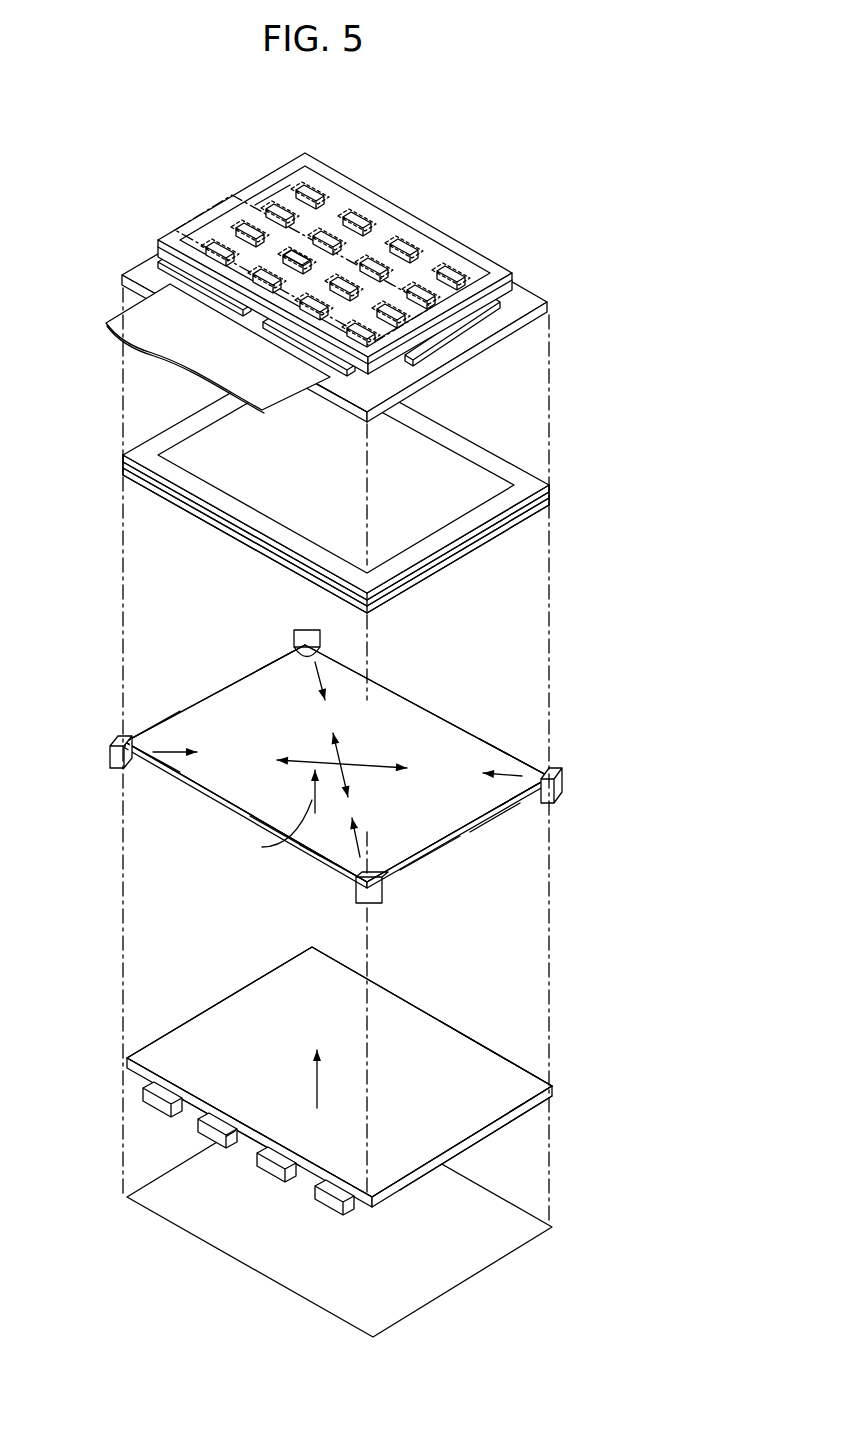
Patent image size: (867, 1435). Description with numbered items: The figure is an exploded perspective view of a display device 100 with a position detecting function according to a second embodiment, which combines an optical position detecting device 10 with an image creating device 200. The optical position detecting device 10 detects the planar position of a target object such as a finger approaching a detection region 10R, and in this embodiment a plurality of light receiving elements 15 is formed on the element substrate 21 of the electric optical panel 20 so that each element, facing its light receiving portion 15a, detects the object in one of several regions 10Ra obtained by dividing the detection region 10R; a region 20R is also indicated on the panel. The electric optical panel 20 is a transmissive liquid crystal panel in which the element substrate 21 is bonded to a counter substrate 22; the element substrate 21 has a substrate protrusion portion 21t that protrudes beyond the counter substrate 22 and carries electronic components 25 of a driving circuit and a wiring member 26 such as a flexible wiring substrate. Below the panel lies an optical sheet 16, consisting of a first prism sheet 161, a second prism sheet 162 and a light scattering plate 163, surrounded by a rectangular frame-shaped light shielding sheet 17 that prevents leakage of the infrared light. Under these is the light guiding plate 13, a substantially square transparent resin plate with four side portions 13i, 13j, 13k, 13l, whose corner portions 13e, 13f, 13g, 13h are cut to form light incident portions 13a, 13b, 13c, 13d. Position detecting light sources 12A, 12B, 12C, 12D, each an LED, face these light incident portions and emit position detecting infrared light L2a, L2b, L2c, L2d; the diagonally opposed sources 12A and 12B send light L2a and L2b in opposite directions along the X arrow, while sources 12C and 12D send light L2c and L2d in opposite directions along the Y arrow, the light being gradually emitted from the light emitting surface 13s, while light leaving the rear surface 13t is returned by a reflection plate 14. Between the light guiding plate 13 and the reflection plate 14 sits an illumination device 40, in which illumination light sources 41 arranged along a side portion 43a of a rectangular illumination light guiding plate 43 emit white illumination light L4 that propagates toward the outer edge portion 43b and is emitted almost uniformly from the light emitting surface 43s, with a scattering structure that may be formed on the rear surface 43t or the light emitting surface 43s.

The display device with position detecting function 100 is at (432, 89).
The image creating device 200 is at (373, 285).
The optical position detecting device 10 is at (342, 757).
The detection region 10R is at (285, 240).
The regions 10Ra is at (286, 188).
The electric optical panel 20 is at (292, 229).
The light source region 20R is at (227, 190).
The element substrate 21 is at (334, 325).
The substrate protrusion portion 21t is at (355, 388).
The counter substrate 22 is at (325, 165).
The electronic components 25 is at (490, 300).
The wiring member 26 is at (258, 412).
The light receiving element 15 is at (340, 263).
The light receiving portion 15a is at (306, 265).
The optical sheet 16 is at (336, 557).
The first prism sheet 161 is at (388, 599).
The second prism sheet 162 is at (428, 571).
The light scattering plate 163 is at (472, 538).
The light shielding sheet 17 is at (478, 455).
The position detecting light source 12A is at (382, 900).
The position detecting light source 12B is at (298, 630).
The position detecting light source 12C is at (113, 768).
The position detecting light source 12D is at (565, 784).
The light guiding plate 13 is at (334, 771).
The light incident portion 13a is at (296, 882).
The light incident portion 13b is at (229, 646).
The light incident portion 13c is at (172, 785).
The light incident portion 13d is at (550, 802).
The corner portion 13e is at (352, 878).
The corner portion 13f is at (287, 652).
The corner portion 13g is at (147, 760).
The corner portion 13h is at (573, 810).
The side portion 13i is at (430, 866).
The side portion 13j is at (123, 740).
The side portion 13k is at (297, 855).
The side portion 13l is at (513, 752).
The light emitting surface 13s is at (425, 720).
The rear surface 13t is at (492, 826).
The position detecting infrared light L2a is at (355, 834).
The position detecting infrared light L2b is at (315, 676).
The position detecting infrared light L2c is at (183, 745).
The position detecting infrared light L2d is at (508, 779).
The reflection plate 14 is at (215, 1250).
The illumination device 40 is at (369, 1104).
The illumination light source 41 is at (213, 1125).
The illumination light guiding plate 43 is at (352, 1094).
The side portion 43a is at (242, 1135).
The outer edge portion 43b is at (518, 1066).
The light emitting surface 43s is at (420, 1100).
The rear surface 43t is at (467, 1150).
The illumination light L4 is at (316, 1078).